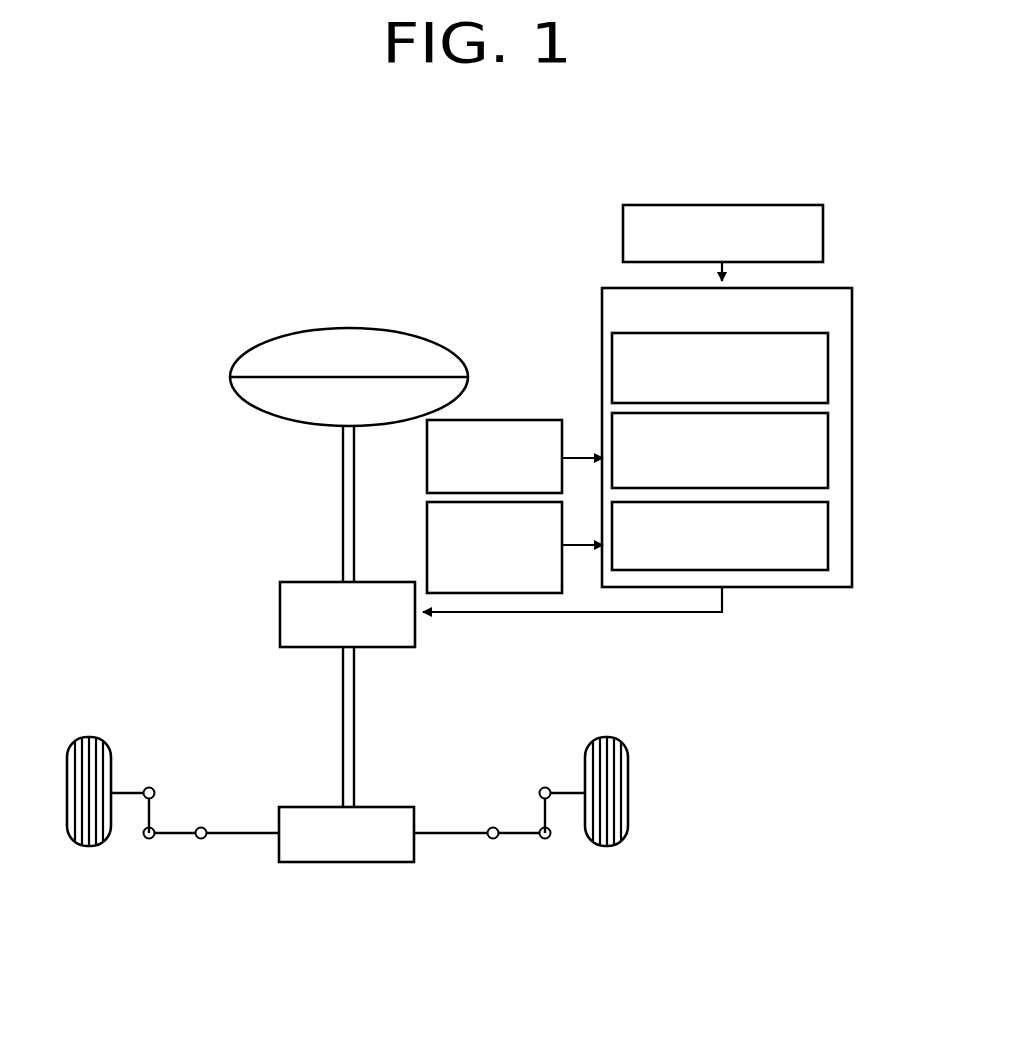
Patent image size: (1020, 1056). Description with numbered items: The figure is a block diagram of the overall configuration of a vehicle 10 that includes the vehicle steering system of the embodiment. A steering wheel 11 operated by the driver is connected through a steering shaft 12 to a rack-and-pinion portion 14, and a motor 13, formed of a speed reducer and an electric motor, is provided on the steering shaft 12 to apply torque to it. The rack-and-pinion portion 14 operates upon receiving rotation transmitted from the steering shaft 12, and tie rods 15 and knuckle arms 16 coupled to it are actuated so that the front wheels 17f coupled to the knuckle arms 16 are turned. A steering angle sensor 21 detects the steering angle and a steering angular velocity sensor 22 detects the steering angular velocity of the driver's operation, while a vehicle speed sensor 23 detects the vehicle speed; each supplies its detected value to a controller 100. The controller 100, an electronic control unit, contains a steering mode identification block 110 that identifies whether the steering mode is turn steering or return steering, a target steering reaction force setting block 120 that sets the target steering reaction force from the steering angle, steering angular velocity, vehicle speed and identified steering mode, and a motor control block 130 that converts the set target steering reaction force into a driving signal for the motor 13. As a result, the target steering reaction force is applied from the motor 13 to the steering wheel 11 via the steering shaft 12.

The vehicle 10 is at (104, 244).
The steering wheel 11 is at (347, 328).
The steering shaft 12 is at (343, 498).
The motor 13 is at (280, 617).
The rack-and-pinion portion 14 is at (347, 840).
The tie rods 15 is at (173, 836).
The knuckle arms 16 is at (128, 795).
The front wheels 17f is at (86, 847).
The steering angle sensor 21 is at (537, 420).
The steering angular velocity sensor 22 is at (427, 546).
The vehicle speed sensor 23 is at (793, 205).
The controller 100 is at (838, 288).
The steering mode identification block 110 is at (828, 369).
The target steering reaction force setting block 120 is at (828, 452).
The motor control block 130 is at (828, 536).